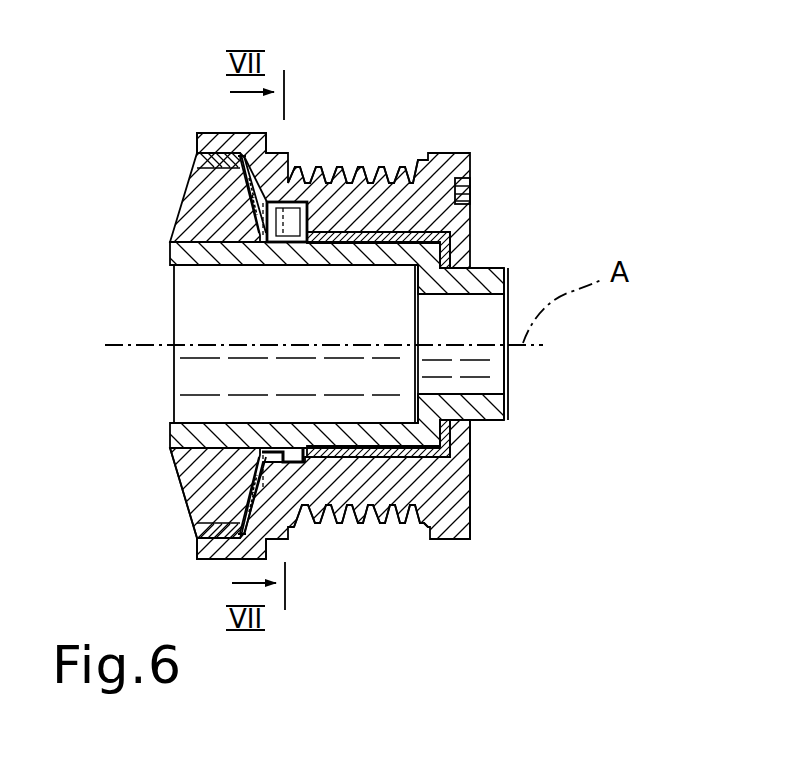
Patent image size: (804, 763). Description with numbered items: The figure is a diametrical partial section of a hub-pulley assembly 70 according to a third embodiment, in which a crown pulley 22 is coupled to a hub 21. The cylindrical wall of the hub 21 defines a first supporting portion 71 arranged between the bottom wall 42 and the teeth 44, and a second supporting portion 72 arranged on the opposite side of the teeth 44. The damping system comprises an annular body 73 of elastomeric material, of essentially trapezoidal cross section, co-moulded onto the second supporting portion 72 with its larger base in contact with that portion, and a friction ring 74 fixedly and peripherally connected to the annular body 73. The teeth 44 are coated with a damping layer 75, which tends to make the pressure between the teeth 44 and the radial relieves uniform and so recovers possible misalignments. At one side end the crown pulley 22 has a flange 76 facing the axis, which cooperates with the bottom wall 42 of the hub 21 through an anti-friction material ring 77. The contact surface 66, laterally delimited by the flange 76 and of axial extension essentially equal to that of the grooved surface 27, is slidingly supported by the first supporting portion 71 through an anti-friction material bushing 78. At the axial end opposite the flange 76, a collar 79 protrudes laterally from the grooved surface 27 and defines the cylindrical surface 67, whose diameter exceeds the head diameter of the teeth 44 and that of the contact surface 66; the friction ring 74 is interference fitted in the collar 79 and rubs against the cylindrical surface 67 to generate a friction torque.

The hub-pulley assembly 70 is at (494, 131).
The anti-friction material bushing 78 is at (397, 167).
The grooved surface 27 is at (370, 156).
The collar 79 is at (210, 133).
The friction ring 74 is at (200, 537).
The cylindrical surface 67 is at (200, 166).
The second supporting portion 72 is at (184, 489).
The damping layer 75 is at (278, 200).
The teeth 44 is at (300, 200).
The anti-friction material ring 77 is at (472, 432).
The annular body 73 is at (197, 217).
The bottom wall 42 is at (430, 410).
The hub 21 is at (495, 261).
The flange 76 is at (462, 245).
The crown pulley 22 is at (479, 542).
The contact surface 66 is at (364, 443).
The first supporting portion 71 is at (405, 428).